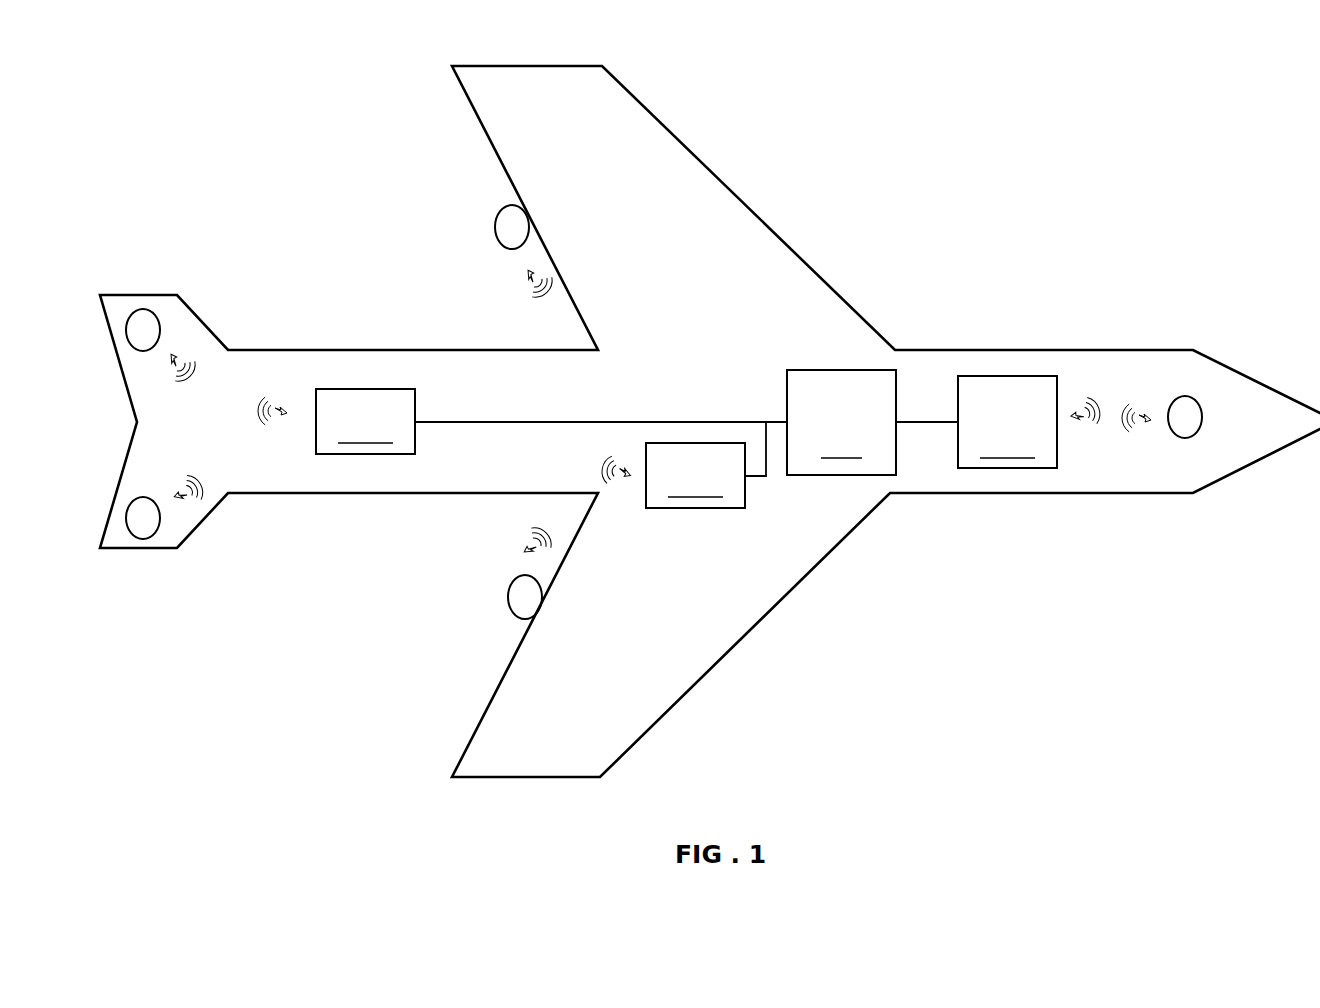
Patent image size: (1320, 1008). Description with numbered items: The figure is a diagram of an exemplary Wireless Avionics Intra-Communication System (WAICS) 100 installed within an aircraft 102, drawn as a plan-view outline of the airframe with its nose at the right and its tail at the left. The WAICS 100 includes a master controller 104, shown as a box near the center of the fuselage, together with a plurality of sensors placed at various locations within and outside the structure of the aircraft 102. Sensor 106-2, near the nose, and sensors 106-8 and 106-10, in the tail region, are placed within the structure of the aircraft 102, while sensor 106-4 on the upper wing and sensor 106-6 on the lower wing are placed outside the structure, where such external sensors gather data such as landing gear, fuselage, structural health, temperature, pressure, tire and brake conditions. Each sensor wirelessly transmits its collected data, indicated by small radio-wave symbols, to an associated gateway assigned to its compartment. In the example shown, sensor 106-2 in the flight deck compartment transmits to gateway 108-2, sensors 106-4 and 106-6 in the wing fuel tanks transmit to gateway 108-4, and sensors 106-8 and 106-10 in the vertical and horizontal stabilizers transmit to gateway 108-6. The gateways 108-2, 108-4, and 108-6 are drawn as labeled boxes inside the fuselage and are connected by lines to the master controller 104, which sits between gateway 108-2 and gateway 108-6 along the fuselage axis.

The Wireless Avionics Intra-Communication System (WAICS) 100 is at (340, 111).
The aircraft 102 is at (855, 310).
The master controller 104 is at (841, 422).
The sensor 106-2 is at (1195, 437).
The sensor 106-4 is at (497, 240).
The sensor 106-6 is at (508, 596).
The sensor 106-8 is at (160, 323).
The sensor 106-10 is at (147, 497).
The gateway 108-2 is at (1031, 422).
The gateway 108-4 is at (672, 475).
The gateway 108-6 is at (336, 421).